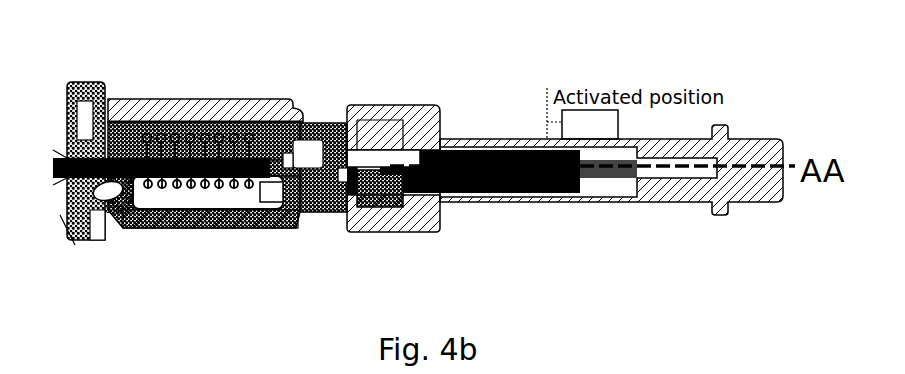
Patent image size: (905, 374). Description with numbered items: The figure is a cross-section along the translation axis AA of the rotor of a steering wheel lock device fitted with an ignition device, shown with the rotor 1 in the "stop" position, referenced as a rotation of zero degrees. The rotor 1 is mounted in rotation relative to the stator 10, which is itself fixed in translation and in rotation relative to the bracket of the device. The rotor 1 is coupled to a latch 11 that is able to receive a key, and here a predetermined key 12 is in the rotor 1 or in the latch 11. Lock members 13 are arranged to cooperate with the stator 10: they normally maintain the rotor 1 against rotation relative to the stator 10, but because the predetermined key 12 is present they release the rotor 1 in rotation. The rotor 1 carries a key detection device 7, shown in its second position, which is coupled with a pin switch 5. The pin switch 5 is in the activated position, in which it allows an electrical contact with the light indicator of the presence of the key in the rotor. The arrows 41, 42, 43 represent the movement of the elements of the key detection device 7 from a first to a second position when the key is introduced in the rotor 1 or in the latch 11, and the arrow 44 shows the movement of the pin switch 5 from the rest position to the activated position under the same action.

The rotor 1 is at (325, 133).
The pin switch 5 is at (521, 198).
The key detection device 7 is at (108, 202).
The stator 10 is at (243, 118).
The latch 11 is at (73, 153).
The predetermined key 12 is at (126, 156).
The lock members 13 is at (173, 142).
The arrow 41 is at (118, 200).
The arrow 42 is at (202, 183).
The arrow 43 is at (354, 196).
The arrow 44 is at (515, 152).